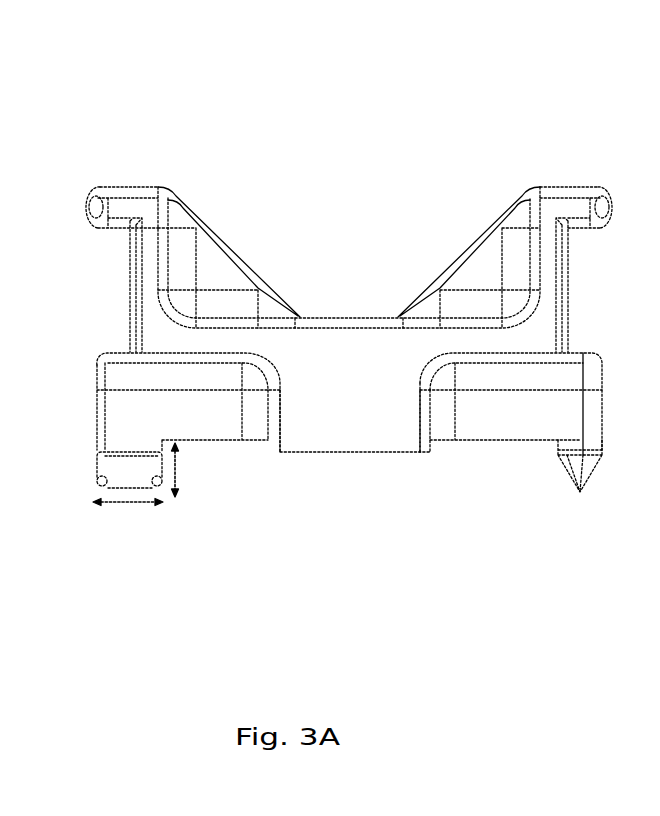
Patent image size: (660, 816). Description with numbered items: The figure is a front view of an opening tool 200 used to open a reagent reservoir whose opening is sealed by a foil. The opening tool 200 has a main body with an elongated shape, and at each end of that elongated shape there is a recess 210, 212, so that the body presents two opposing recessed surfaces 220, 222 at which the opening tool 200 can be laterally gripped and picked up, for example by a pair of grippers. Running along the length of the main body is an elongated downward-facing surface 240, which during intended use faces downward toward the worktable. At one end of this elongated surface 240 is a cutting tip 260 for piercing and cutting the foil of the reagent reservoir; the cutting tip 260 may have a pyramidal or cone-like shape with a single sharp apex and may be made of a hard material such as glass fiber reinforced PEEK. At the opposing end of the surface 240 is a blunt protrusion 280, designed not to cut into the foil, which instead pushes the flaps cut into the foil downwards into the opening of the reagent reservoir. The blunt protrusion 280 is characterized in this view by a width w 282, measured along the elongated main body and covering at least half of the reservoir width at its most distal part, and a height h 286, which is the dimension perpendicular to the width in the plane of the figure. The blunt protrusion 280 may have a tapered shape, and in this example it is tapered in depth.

The opening tool 200 is at (274, 116).
The recess 210 is at (107, 245).
The recess 212 is at (573, 247).
The recessed surface 220 is at (116, 286).
The recessed surface 222 is at (579, 286).
The elongated downward-facing surface 240 is at (451, 474).
The cutting tip 260 is at (578, 500).
The blunt protrusion 280 is at (133, 493).
The width w 282 is at (132, 493).
The height h 286 is at (177, 473).